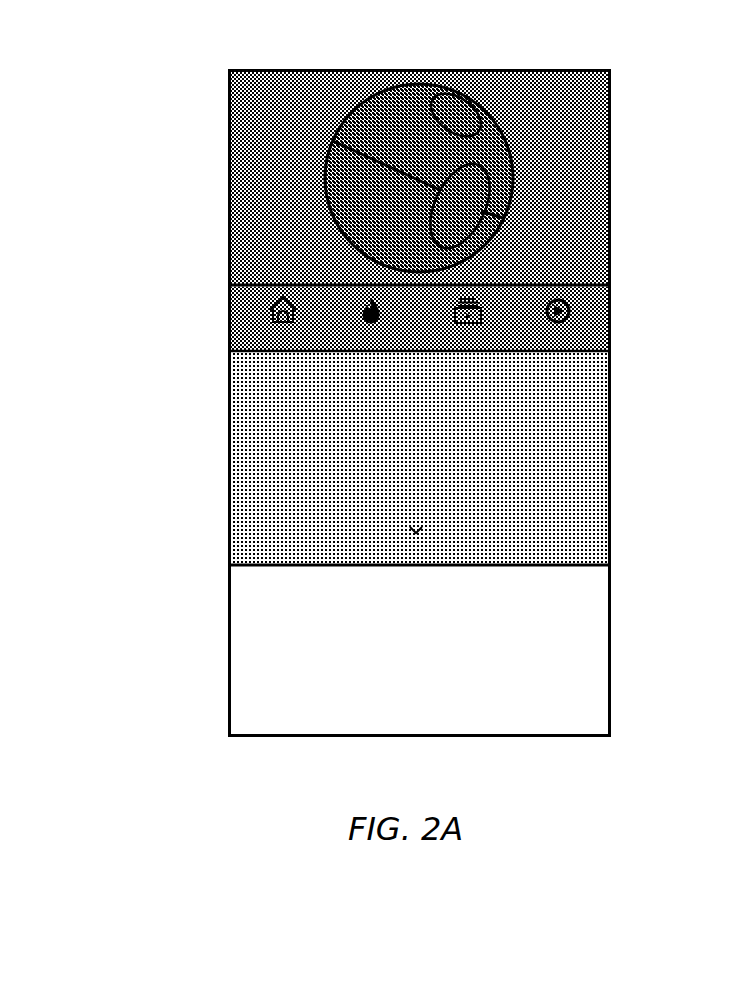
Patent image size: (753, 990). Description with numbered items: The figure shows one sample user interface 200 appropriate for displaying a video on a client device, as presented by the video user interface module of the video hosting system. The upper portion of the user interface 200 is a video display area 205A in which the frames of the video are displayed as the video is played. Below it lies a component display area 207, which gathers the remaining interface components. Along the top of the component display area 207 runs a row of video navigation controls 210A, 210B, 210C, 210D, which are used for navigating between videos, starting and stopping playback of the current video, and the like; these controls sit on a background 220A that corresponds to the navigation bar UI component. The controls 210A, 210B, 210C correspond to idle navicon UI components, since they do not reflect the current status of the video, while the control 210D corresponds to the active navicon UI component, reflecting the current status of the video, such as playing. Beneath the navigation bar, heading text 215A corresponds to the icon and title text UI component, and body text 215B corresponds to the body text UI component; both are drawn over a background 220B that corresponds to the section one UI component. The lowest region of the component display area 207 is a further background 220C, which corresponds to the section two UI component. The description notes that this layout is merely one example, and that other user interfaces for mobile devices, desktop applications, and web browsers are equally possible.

The user interface 200 is at (163, 26).
The video display area 205A is at (220, 68).
The component display area 207 is at (178, 280).
The video navigation control 210A is at (292, 314).
The video navigation control 210B is at (370, 310).
The video navigation control 210C is at (478, 310).
The video navigation control 210D is at (562, 306).
The heading text 215A is at (246, 388).
The body text 215B is at (246, 454).
The background 220A is at (601, 306).
The background 220B is at (586, 451).
The background 220C is at (586, 622).